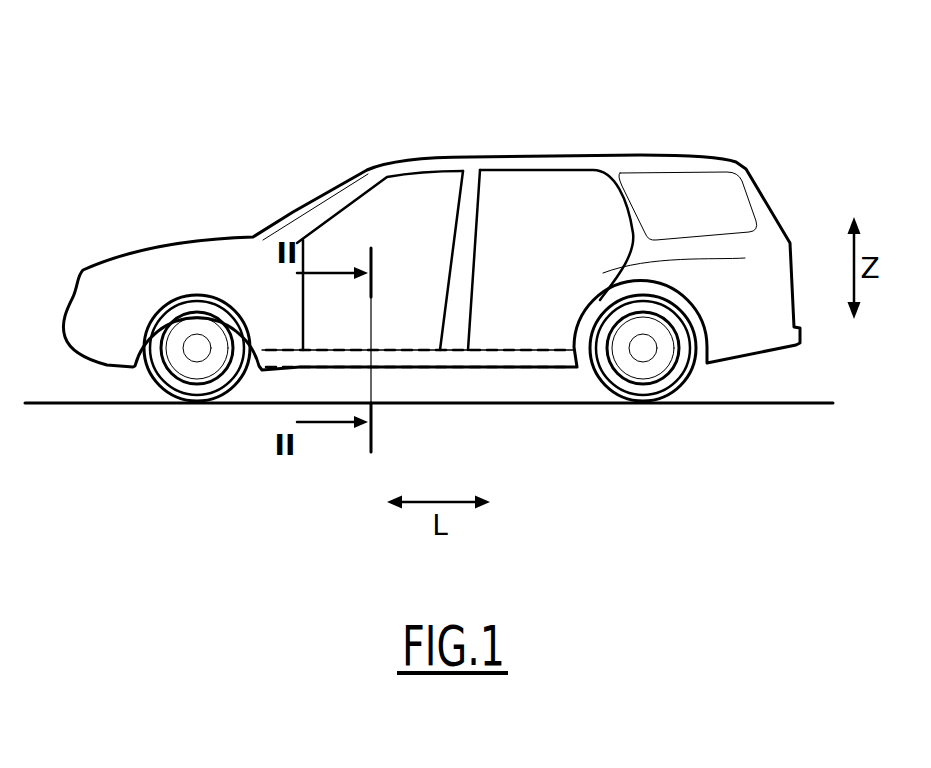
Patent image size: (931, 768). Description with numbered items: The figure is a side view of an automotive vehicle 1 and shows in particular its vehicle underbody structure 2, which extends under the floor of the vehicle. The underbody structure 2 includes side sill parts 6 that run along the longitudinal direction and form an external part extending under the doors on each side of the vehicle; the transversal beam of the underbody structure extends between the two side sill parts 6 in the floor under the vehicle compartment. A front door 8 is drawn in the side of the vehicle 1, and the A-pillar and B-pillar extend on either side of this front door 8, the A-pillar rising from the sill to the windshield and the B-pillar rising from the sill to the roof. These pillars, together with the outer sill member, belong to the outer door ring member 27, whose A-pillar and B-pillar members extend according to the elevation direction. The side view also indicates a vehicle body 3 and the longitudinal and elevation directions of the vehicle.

The automotive vehicle 1 is at (442, 243).
The vehicle underbody structure 2 is at (404, 358).
The vehicle body 3 is at (745, 258).
The side sill part 6 is at (462, 358).
The front door 8 is at (323, 259).
The outer door ring member 27 is at (450, 288).